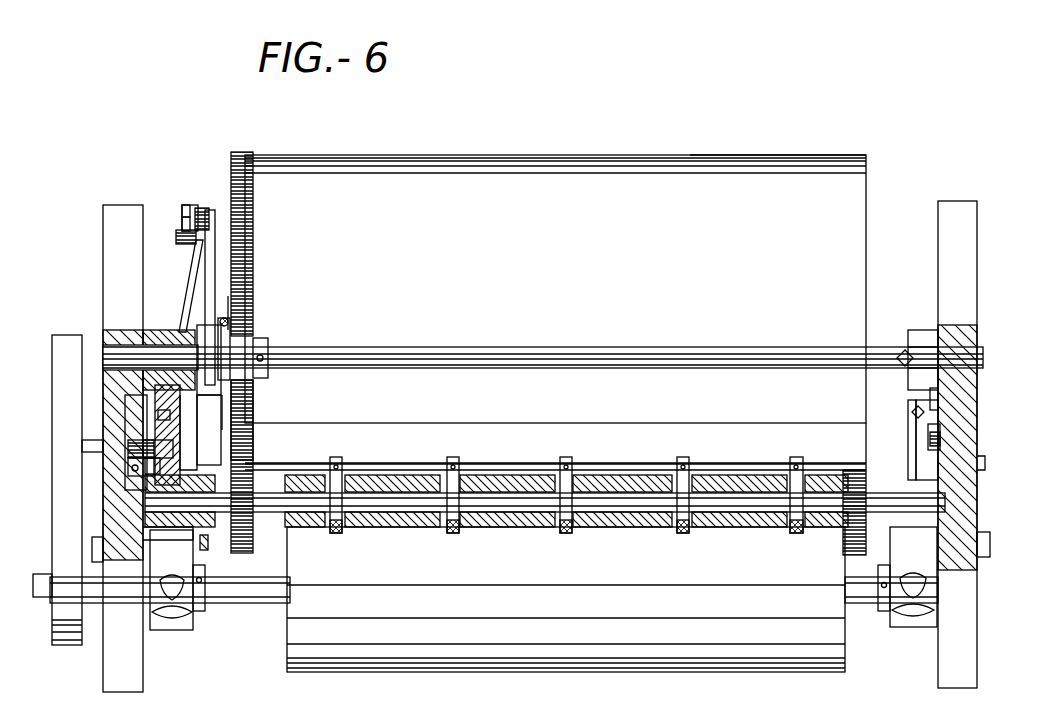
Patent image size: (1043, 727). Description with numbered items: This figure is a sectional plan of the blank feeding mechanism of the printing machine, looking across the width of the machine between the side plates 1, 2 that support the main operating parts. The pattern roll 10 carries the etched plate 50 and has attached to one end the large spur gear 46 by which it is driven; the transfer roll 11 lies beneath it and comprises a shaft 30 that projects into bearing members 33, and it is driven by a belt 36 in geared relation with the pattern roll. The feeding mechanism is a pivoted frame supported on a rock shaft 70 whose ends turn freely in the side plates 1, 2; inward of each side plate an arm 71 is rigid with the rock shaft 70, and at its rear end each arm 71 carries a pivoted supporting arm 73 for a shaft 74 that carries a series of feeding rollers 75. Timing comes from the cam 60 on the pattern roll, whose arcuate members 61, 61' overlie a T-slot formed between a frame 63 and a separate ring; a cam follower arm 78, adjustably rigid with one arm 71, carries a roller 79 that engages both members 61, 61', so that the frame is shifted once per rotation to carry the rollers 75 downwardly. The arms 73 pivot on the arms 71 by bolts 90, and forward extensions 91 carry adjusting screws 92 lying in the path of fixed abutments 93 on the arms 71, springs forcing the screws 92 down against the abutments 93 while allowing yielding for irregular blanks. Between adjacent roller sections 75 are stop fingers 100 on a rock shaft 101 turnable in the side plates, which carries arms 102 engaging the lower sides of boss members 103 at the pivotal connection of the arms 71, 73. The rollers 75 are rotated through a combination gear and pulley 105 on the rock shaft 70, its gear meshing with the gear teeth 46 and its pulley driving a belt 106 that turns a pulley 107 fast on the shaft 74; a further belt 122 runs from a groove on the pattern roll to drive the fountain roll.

The side plate 1 is at (103, 243).
The side plate 2 is at (938, 243).
The pattern roll 10 is at (700, 158).
The transfer roll 11 is at (566, 599).
The shaft 30 is at (97, 603).
The bearing member 33 is at (186, 624).
The belt 36 is at (60, 500).
The spur gear 46 is at (254, 414).
The etched plate 50 is at (555, 312).
The cam 60 is at (194, 206).
The arcuate member 61 is at (171, 216).
The arcuate member 61' is at (173, 202).
The frame 63 is at (210, 214).
The rock shaft 70 is at (428, 350).
The arm 71 is at (166, 335).
The supporting arm 73 is at (185, 452).
The shaft 74 is at (640, 498).
The feeding roller 75 is at (314, 476).
The cam follower arm 78 is at (192, 275).
The roller 79 is at (178, 238).
The bolt 90 is at (140, 446).
The forward extension 91 is at (912, 402).
The adjusting screw 92 is at (912, 412).
The abutment 93 is at (160, 418).
The stop finger 100 is at (456, 470).
The rock shaft 101 is at (396, 462).
The arm 102 is at (132, 458).
The boss member 103 is at (150, 430).
The combination gear and pulley 105 is at (232, 334).
The belt 106 is at (234, 318).
The pulley 107 is at (195, 540).
The belt 122 is at (254, 265).